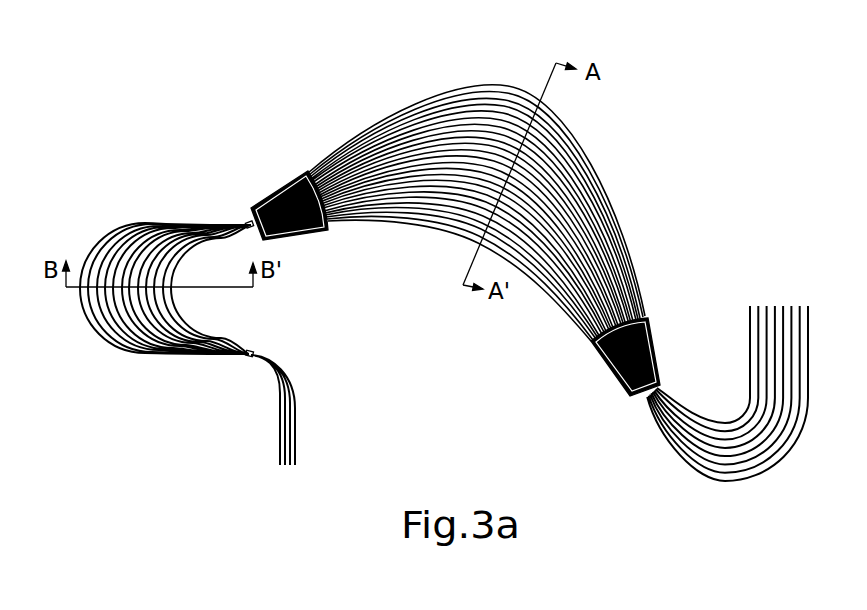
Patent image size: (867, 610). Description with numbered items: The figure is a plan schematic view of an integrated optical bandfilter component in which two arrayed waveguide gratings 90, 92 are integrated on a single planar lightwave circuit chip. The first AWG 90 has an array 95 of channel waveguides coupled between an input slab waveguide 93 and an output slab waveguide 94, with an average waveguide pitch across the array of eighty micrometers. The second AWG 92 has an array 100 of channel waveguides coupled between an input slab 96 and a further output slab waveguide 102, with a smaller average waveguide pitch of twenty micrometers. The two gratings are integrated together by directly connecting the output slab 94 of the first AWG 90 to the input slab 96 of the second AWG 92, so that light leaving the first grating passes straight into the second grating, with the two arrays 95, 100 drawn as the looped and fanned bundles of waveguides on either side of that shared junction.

The first arrayed waveguide grating 90 is at (152, 162).
The second arrayed waveguide grating 92 is at (681, 236).
The input slab waveguide 93 is at (238, 352).
The output slab waveguide 94 is at (237, 212).
The array of channel waveguides 95 is at (110, 359).
The input slab waveguide 96 is at (285, 170).
The array of channel waveguides 100 is at (450, 67).
The output slab waveguide 102 is at (604, 366).